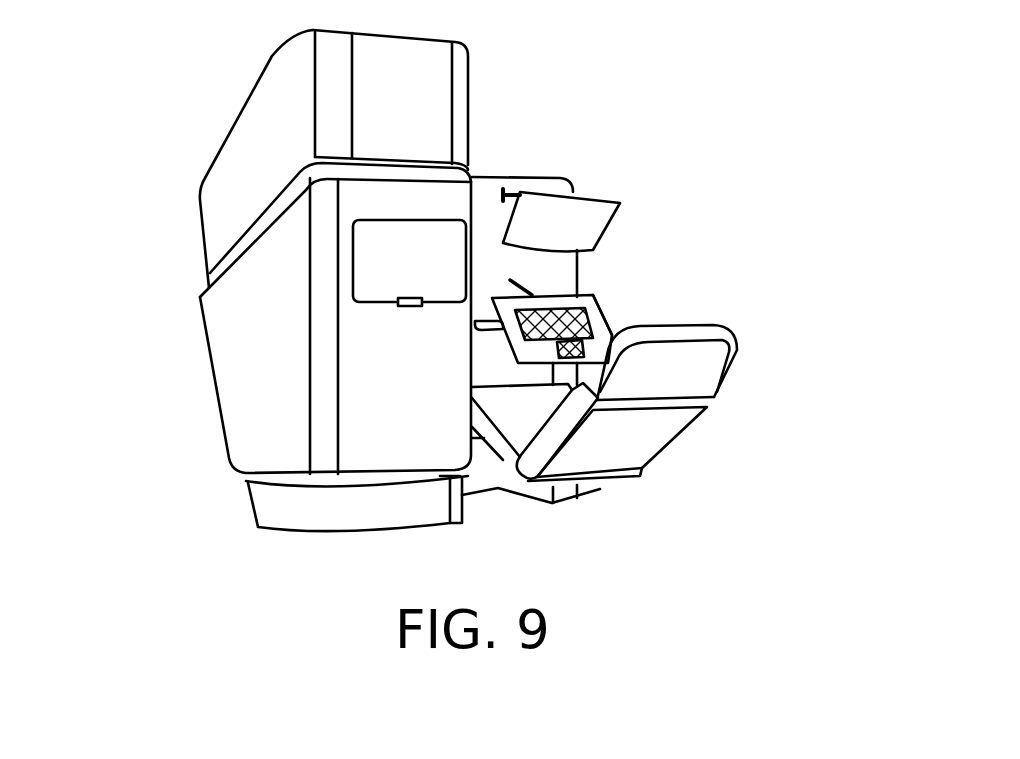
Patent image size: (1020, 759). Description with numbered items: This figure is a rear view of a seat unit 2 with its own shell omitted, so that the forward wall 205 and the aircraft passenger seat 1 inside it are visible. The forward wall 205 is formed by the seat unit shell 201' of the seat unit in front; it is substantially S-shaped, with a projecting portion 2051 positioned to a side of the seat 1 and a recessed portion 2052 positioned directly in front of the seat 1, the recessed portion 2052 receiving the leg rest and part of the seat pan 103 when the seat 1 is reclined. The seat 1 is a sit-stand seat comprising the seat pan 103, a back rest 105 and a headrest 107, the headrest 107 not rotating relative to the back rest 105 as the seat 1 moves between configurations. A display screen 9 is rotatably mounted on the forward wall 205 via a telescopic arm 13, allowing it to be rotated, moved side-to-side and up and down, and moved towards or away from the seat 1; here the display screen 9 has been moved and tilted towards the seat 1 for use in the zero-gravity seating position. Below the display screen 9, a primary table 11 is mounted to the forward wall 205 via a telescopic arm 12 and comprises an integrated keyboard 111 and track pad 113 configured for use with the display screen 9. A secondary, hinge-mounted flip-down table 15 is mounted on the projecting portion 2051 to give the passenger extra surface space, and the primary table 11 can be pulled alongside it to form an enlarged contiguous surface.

The aircraft passenger seat 1 is at (788, 331).
The seat unit 2 is at (222, 80).
The display screen 9 is at (608, 202).
The primary table 11 is at (570, 305).
The telescopic arm 12 is at (492, 298).
The telescopic arm 13 is at (517, 193).
The secondary table 15 is at (390, 260).
The seat pan 103 is at (520, 440).
The back rest 105 is at (665, 435).
The headrest 107 is at (707, 373).
The keyboard 111 is at (577, 342).
The track pad 113 is at (600, 338).
The seat unit shell 201' is at (265, 236).
The forward wall 205 is at (323, 345).
The projecting portion 2051 is at (383, 427).
The recessed portion 2052 is at (483, 183).